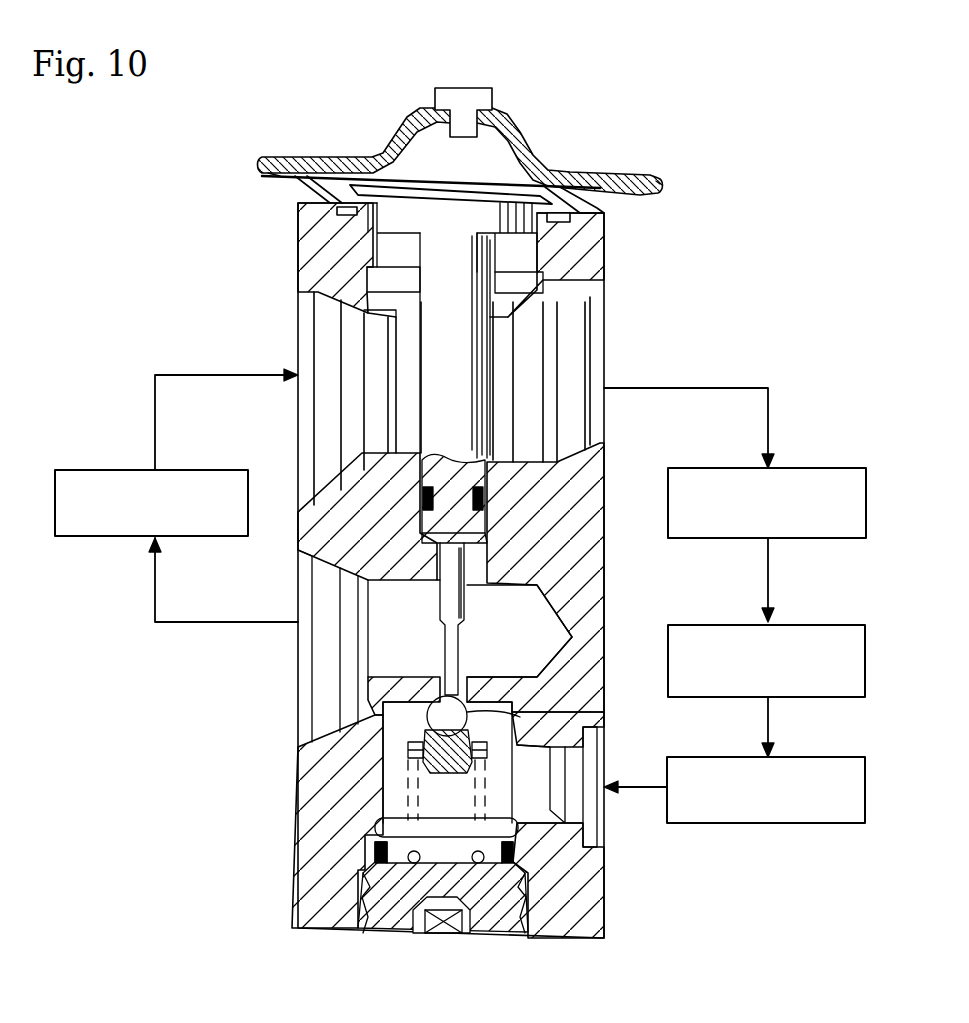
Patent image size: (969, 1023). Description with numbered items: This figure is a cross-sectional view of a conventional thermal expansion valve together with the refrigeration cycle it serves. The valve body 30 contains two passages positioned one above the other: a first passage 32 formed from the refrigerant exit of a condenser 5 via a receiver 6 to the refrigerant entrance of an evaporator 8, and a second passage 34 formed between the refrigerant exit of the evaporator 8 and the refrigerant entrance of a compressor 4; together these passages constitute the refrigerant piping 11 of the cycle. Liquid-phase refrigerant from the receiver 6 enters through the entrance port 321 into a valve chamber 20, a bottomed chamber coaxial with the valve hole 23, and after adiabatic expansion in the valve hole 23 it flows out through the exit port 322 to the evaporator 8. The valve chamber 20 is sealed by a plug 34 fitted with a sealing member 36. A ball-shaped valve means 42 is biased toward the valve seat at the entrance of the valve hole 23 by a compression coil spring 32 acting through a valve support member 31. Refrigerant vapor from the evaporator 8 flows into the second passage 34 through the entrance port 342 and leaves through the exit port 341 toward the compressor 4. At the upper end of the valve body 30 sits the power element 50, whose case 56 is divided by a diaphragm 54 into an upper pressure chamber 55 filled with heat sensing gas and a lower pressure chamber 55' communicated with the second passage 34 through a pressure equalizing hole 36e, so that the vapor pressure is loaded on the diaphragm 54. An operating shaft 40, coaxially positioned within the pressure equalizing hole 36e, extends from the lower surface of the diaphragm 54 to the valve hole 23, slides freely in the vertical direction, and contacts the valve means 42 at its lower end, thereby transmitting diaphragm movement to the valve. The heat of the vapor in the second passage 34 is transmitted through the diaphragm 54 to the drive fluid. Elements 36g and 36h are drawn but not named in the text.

The compressor 4 is at (812, 468).
The condenser 5 is at (848, 625).
The receiver 6 is at (848, 757).
The evaporator 8 is at (100, 470).
The refrigerant piping 11 is at (178, 373).
The valve chamber 20 is at (395, 822).
The valve hole 23 is at (467, 677).
The valve body 30 is at (606, 246).
The valve support member 31 is at (423, 746).
The first passage 32 is at (397, 584).
The second passage 34 is at (497, 915).
The sealing member 36 is at (378, 856).
The pressure equalizing hole 36e is at (415, 303).
The seal member 36g is at (487, 500).
The stud of power element 36h is at (458, 97).
The operating shaft 40 is at (433, 357).
The valve means 42 is at (467, 705).
The power element 50 is at (676, 181).
The diaphragm 54 is at (600, 186).
The lower pressure chamber 55 is at (460, 129).
The lower pressure chamber 55' is at (382, 237).
The case 56 is at (346, 170).
The entrance port 321 is at (604, 812).
The exit port 322 is at (300, 708).
The exit port 341 is at (606, 467).
The entrance port 342 is at (300, 448).